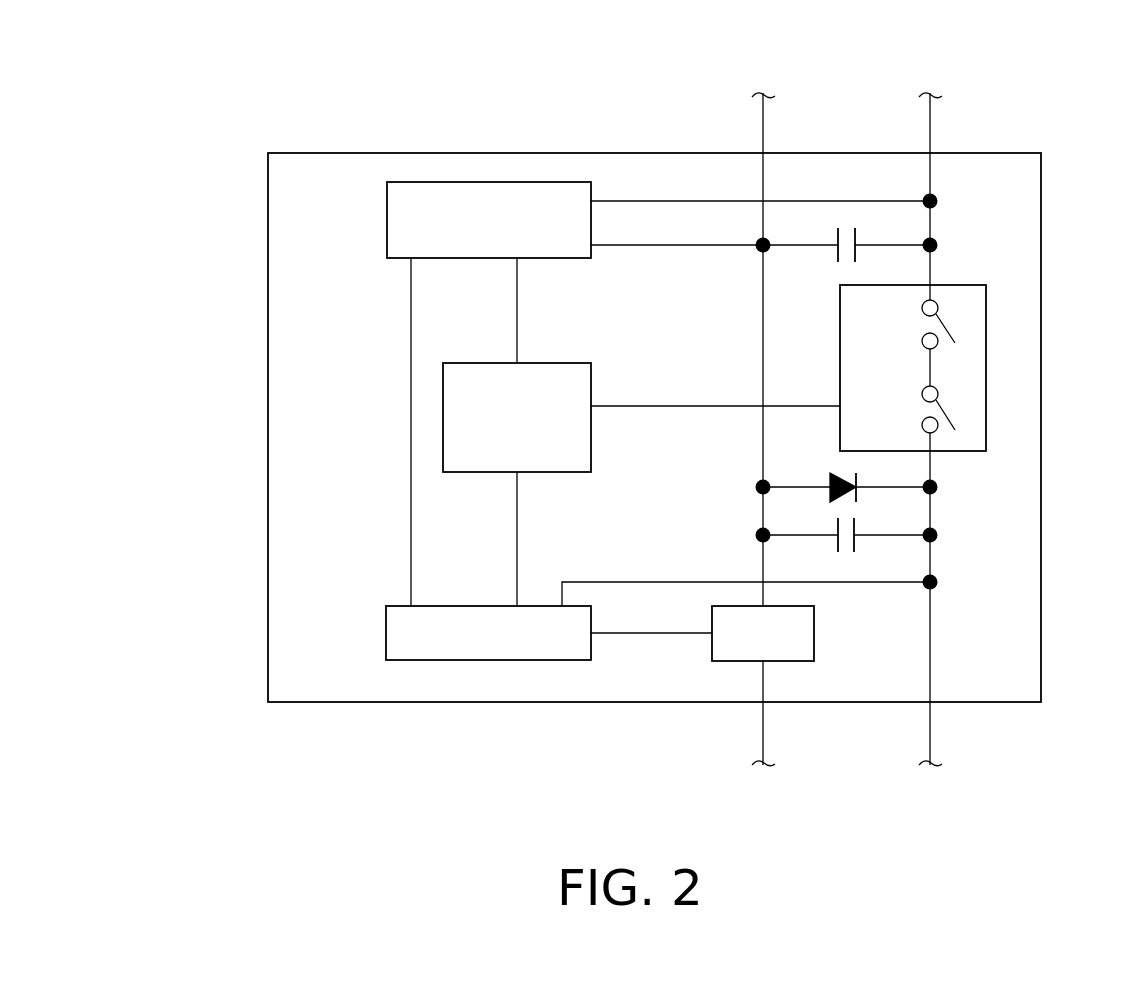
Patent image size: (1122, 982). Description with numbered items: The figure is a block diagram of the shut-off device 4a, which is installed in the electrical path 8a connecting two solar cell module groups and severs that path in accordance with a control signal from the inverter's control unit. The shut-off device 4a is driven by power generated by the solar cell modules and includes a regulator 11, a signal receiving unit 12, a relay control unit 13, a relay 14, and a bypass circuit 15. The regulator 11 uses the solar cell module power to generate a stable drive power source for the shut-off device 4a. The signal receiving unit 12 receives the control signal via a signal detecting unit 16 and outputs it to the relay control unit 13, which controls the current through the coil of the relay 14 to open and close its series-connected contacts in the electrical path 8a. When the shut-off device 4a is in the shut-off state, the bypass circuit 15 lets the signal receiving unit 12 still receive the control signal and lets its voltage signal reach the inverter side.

The shut-off device 4a is at (1024, 153).
The electrical path 8a is at (930, 734).
The regulator 11 is at (387, 245).
The signal receiving unit 12 is at (386, 636).
The relay control unit 13 is at (443, 417).
The relay 14 is at (986, 397).
The bypass circuit 15 is at (874, 537).
The signal detecting unit 16 is at (800, 661).